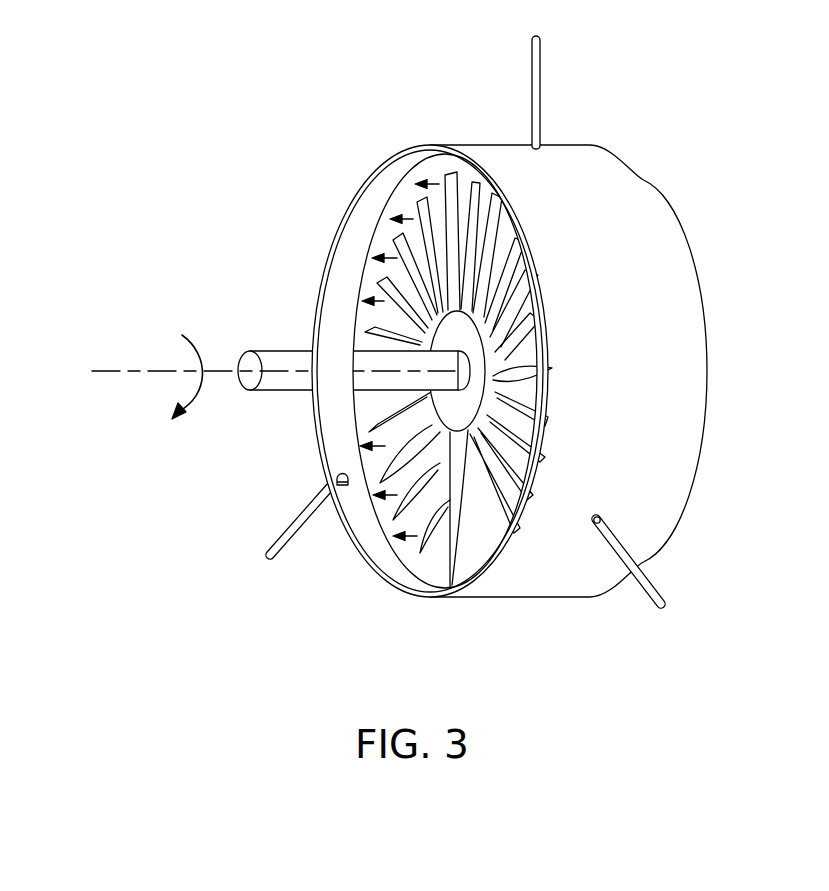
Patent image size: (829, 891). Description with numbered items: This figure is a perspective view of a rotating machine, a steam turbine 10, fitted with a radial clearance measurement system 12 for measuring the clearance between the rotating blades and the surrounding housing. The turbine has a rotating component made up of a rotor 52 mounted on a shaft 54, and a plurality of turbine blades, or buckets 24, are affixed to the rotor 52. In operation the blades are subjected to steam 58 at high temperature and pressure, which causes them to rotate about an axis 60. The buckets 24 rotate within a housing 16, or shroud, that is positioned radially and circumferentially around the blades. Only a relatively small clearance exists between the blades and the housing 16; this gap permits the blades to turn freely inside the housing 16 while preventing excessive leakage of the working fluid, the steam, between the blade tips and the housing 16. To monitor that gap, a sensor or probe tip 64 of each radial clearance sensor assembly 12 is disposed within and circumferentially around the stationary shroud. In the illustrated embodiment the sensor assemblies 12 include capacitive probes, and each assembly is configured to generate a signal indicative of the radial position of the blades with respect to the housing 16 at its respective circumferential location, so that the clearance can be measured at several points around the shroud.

The steam turbine 10 is at (233, 97).
The radial clearance measurement system 12 is at (285, 528).
The housing 16 is at (383, 571).
The buckets 24 is at (488, 178).
The rotor 52 is at (476, 386).
The shaft 54 is at (272, 350).
The steam 58 is at (410, 212).
The axis 60 is at (110, 366).
The probe tip 64 is at (336, 477).